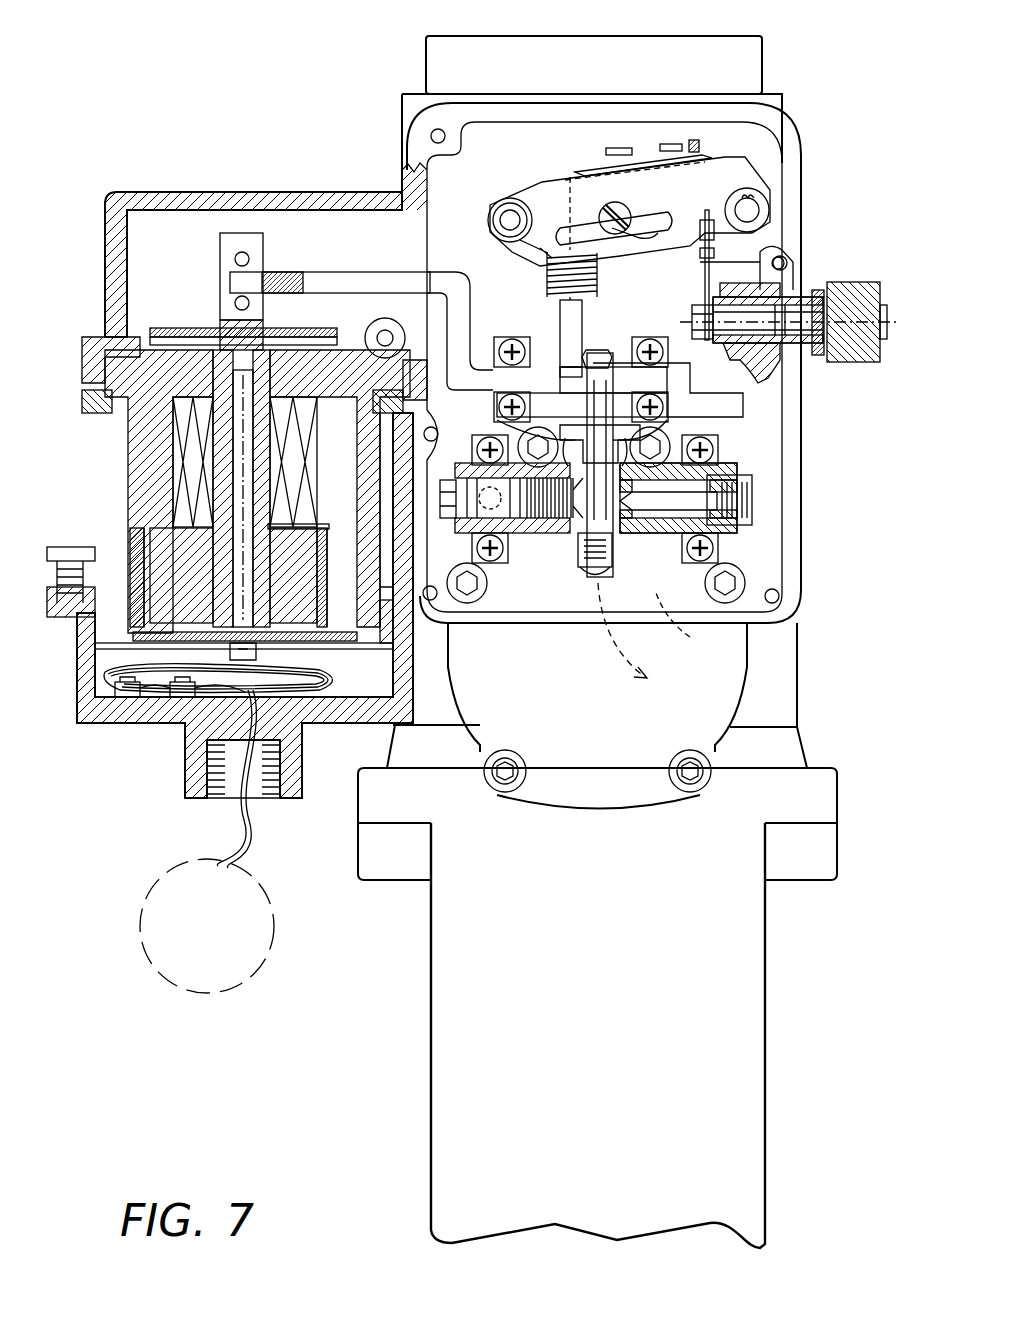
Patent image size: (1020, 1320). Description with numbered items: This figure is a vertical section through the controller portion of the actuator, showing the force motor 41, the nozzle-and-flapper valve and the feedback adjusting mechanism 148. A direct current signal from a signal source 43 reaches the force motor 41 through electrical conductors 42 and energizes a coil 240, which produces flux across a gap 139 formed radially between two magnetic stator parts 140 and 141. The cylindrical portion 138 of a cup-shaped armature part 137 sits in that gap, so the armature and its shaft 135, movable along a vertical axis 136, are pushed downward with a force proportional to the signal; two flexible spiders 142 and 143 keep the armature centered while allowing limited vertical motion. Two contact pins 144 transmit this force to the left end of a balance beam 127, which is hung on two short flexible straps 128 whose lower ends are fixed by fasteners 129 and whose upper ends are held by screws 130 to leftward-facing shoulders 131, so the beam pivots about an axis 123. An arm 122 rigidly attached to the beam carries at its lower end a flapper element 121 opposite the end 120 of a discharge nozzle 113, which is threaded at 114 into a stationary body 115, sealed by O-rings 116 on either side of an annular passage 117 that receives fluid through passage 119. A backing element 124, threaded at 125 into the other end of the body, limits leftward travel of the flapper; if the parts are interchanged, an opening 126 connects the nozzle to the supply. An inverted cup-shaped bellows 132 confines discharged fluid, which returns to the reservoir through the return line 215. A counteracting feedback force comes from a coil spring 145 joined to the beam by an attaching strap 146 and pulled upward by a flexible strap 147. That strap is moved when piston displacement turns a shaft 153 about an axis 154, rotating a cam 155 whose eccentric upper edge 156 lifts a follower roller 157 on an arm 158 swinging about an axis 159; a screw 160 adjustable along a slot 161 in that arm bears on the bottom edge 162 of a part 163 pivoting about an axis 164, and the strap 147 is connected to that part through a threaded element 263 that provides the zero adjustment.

The force motor 41 is at (242, 176).
The electrical conductors 42 is at (245, 836).
The signal source 43 is at (155, 885).
The discharge nozzle 113 is at (620, 533).
The threaded connection 114 is at (670, 533).
The stationary body 115 is at (725, 533).
The O-rings 116 is at (690, 492).
The annular passage 117 is at (700, 612).
The passage 119 is at (715, 500).
The nozzle end 120 is at (612, 570).
The flapper element 121 is at (567, 533).
The arm 122 is at (620, 440).
The axis 123 is at (582, 406).
The backing element 124 is at (560, 533).
The threaded connection 125 is at (486, 586).
The opening 126 is at (490, 510).
The balance beam 127 is at (470, 320).
The flexible straps 128 is at (600, 385).
The fasteners 129 is at (690, 385).
The screws 130 is at (565, 372).
The shoulders 131 is at (607, 352).
The bellows 132 is at (540, 440).
The shaft 135 is at (253, 498).
The vertical axis 136 is at (253, 405).
The armature part 137 is at (318, 718).
The cylindrical portion 138 is at (328, 548).
The gap 139 is at (327, 583).
The stator part 140 is at (120, 545).
The stator part 141 is at (325, 527).
The flexible spider 142 is at (195, 328).
The flexible spider 143 is at (330, 637).
The contact pins 144 is at (249, 259).
The coil spring 145 is at (597, 278).
The attaching strap 146 is at (582, 312).
The flexible strap 147 is at (528, 248).
The internal adjusting mechanism 148 is at (765, 150).
The shaft 153 is at (780, 383).
The axis 154 is at (765, 330).
The cam 155 is at (710, 262).
The upper edge 156 is at (780, 250).
The follower roller 157 is at (700, 252).
The arm 158 is at (528, 185).
The axis 159 is at (510, 220).
The screw 160 is at (638, 240).
The slot 161 is at (620, 210).
The bottom edge 162 is at (690, 218).
The part 163 is at (575, 180).
The axis 164 is at (747, 210).
The return line 215 is at (610, 672).
The coil 240 is at (185, 450).
The element 263 is at (617, 148).